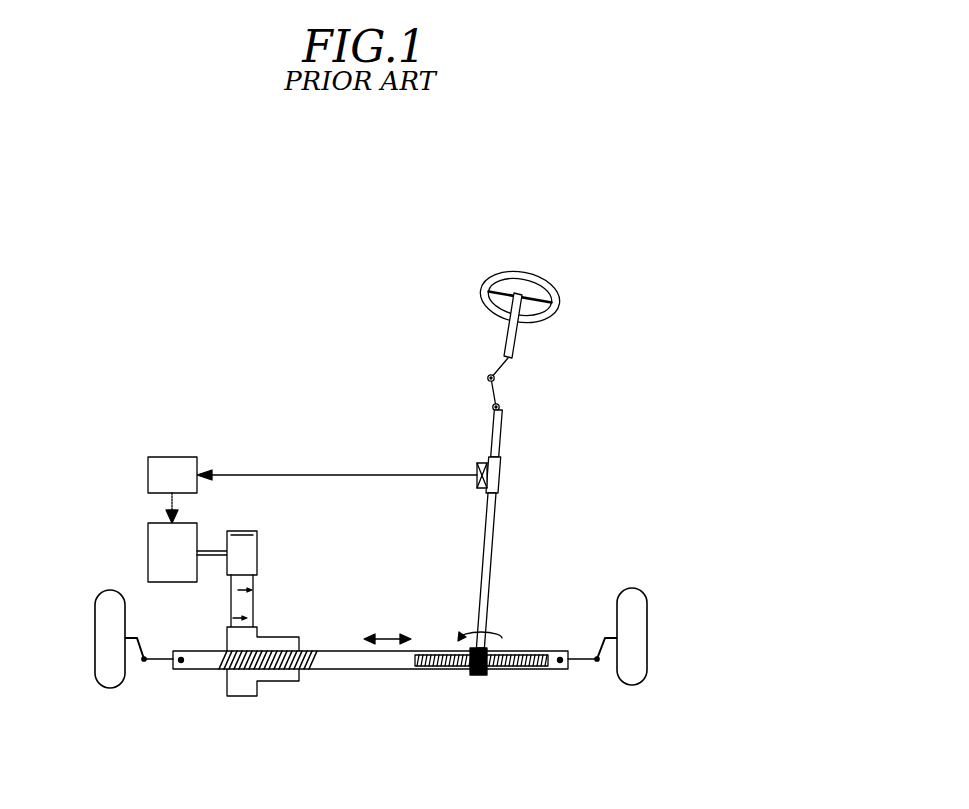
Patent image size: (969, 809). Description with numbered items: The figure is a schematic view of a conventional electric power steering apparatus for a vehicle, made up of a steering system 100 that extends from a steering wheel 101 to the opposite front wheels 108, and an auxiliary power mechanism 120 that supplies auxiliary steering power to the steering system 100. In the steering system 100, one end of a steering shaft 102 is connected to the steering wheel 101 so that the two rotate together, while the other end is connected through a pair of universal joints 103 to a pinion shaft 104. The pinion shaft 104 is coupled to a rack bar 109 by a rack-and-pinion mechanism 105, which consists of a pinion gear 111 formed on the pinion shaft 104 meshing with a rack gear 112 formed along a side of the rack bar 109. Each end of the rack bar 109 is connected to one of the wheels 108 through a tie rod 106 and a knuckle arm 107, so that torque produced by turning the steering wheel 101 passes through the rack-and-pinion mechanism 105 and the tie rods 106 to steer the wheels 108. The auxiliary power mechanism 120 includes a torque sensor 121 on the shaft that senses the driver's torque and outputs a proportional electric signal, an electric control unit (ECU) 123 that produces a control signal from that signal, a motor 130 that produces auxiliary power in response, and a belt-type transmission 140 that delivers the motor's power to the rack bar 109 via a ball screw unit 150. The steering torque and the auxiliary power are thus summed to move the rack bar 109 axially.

The steering system 100 is at (643, 209).
The steering wheel 101 is at (480, 291).
The steering shaft 102 is at (517, 333).
The universal joints 103 is at (500, 407).
The pinion shaft 104 is at (494, 513).
The rack-and-pinion mechanism 105 is at (481, 696).
The tie rod 106 is at (583, 662).
The knuckle arm 107 is at (601, 647).
The front wheels 108 is at (104, 615).
The rack bar 109 is at (386, 671).
The pinion gear 111 is at (478, 677).
The rack gear 112 is at (520, 672).
The auxiliary power mechanism 120 is at (274, 418).
The torque sensor 121 is at (480, 462).
The electric control unit (ECU) 123 is at (147, 470).
The motor 130 is at (147, 533).
The belt-type transmission 140 is at (260, 586).
The ball screw unit 150 is at (270, 694).